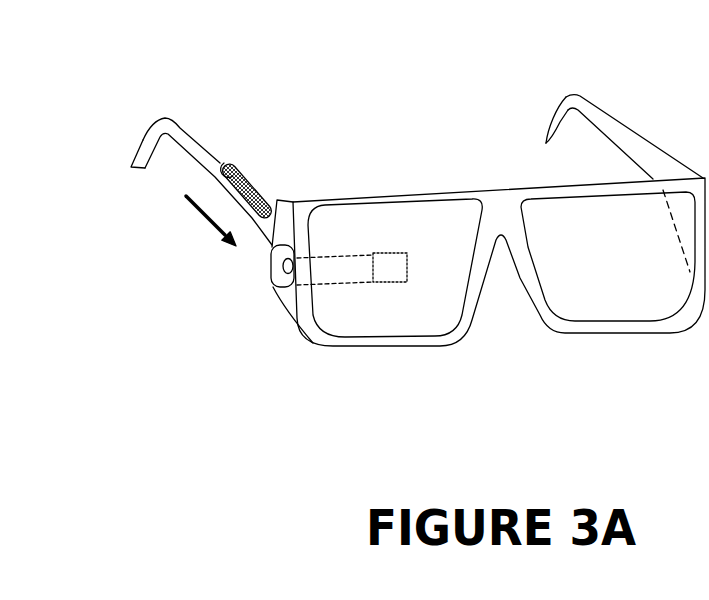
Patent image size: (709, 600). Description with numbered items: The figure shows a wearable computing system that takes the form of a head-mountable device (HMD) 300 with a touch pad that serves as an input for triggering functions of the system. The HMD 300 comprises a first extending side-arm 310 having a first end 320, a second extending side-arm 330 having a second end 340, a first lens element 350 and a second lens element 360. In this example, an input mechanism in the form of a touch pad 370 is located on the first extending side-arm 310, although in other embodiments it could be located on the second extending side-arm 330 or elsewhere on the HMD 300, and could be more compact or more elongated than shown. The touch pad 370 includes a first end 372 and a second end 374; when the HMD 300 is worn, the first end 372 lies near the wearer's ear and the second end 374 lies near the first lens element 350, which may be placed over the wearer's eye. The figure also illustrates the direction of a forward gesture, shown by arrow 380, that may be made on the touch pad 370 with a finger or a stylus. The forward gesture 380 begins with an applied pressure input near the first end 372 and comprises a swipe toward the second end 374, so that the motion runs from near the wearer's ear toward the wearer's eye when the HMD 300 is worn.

The head-mountable device (HMD) 300 is at (360, 77).
The first extending side-arm 310 is at (202, 146).
The first end 320 is at (130, 168).
The second extending side-arm 330 is at (617, 131).
The second end 340 is at (547, 143).
The first lens element 350 is at (343, 322).
The second lens element 360 is at (575, 298).
The touch pad 370 is at (251, 181).
The first end of touch pad 372 is at (221, 162).
The second end of touch pad 374 is at (277, 201).
The forward gesture arrow 380 is at (188, 198).